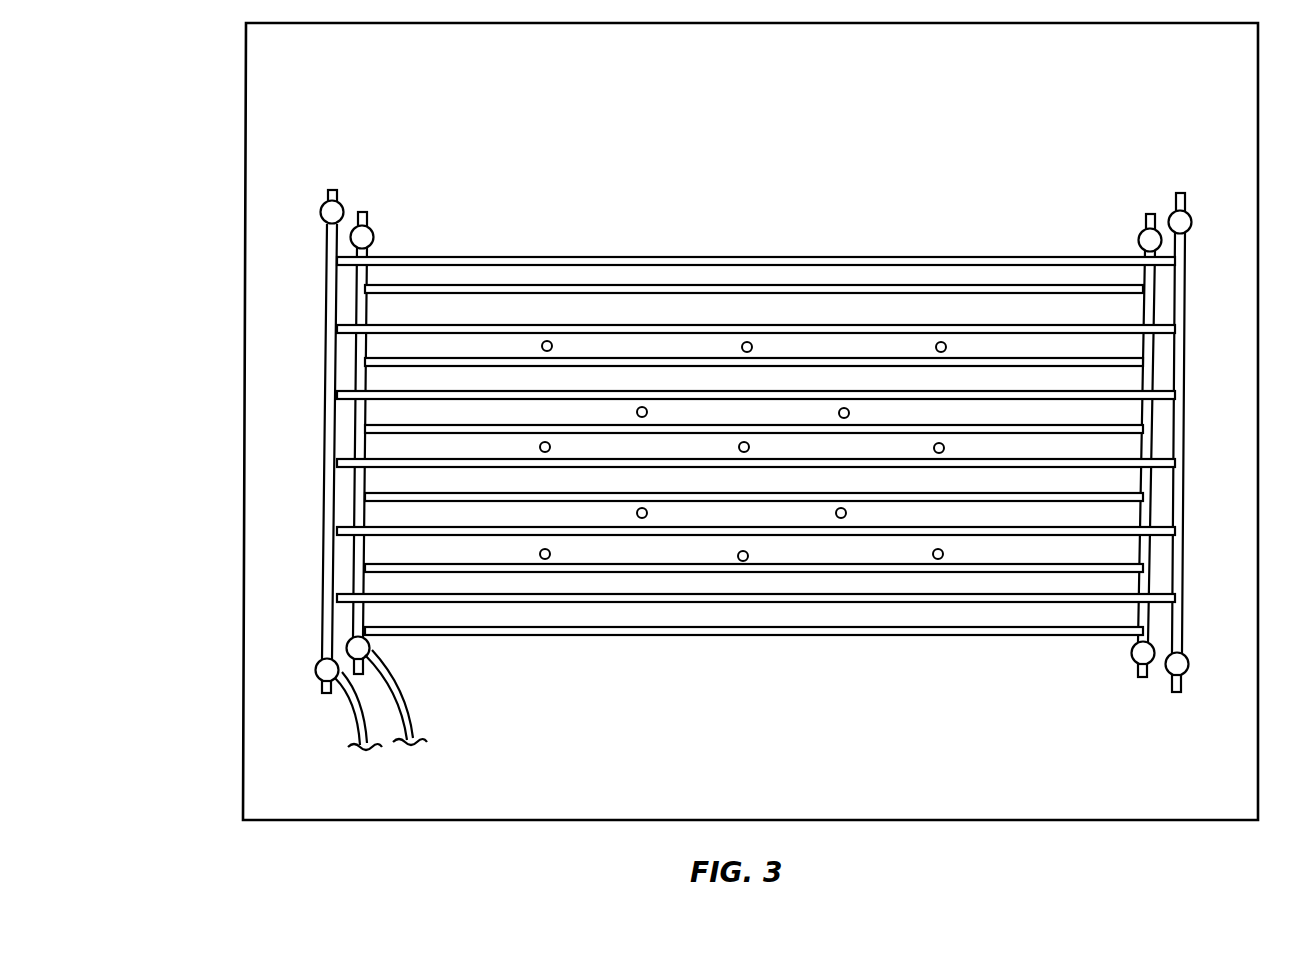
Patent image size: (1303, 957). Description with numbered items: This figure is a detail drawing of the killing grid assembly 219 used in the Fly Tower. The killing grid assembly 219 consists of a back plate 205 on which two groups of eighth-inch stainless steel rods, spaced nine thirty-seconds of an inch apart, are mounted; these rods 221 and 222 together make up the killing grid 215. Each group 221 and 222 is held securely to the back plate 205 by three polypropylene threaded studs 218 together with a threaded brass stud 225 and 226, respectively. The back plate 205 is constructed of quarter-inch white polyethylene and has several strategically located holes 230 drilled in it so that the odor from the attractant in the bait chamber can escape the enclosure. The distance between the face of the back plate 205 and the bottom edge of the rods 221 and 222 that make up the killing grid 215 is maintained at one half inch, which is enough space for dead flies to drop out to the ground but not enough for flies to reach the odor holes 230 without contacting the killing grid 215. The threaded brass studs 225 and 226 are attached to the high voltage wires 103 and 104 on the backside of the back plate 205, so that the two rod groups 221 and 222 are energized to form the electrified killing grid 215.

The killing grid assembly 219 is at (750, 421).
The back plate 205 is at (268, 500).
The first group of rods 221 is at (325, 259).
The second group of rods 222 is at (355, 303).
The killing grid 215 is at (665, 257).
The holes 230 is at (738, 555).
The polypropylene threaded studs 218 is at (342, 202).
The threaded brass stud 225 is at (318, 672).
The threaded brass stud 226 is at (370, 652).
The high voltage wire 103 is at (367, 750).
The high voltage wire 104 is at (410, 745).